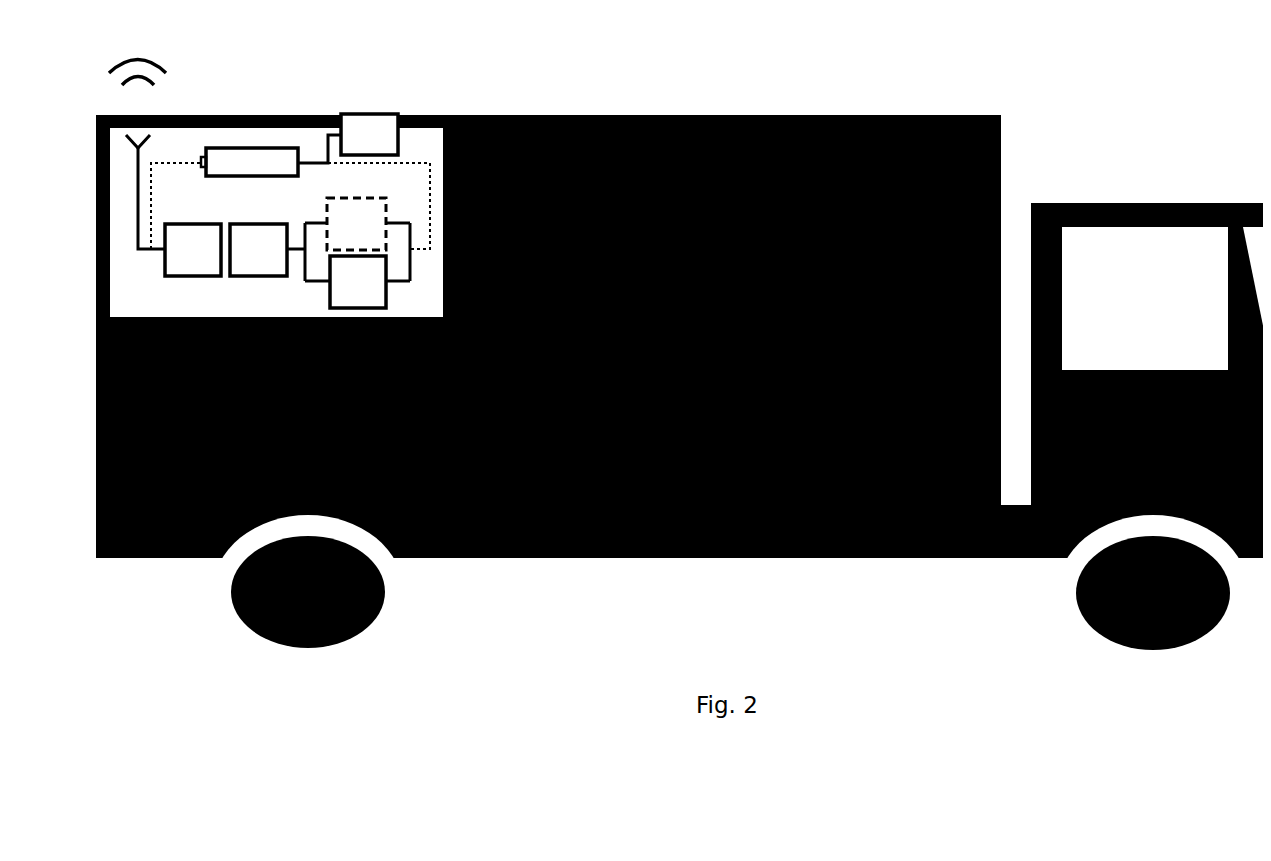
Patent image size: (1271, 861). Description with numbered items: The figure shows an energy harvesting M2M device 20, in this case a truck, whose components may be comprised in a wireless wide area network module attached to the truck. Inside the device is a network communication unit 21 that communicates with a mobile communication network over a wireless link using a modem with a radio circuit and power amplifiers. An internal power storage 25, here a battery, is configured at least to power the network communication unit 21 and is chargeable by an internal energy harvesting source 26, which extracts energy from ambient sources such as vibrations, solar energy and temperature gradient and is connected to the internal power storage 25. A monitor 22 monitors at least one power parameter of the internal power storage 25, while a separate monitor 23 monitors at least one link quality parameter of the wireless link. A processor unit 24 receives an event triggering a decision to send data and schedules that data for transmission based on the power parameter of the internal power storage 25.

The energy harvesting M2M device 20 is at (903, 107).
The network communication unit 21 is at (193, 250).
The monitor 22 is at (358, 282).
The monitor 23 is at (356, 224).
The processor unit 24 is at (258, 250).
The internal power storage 25 is at (258, 126).
The energy harvesting source 26 is at (369, 134).